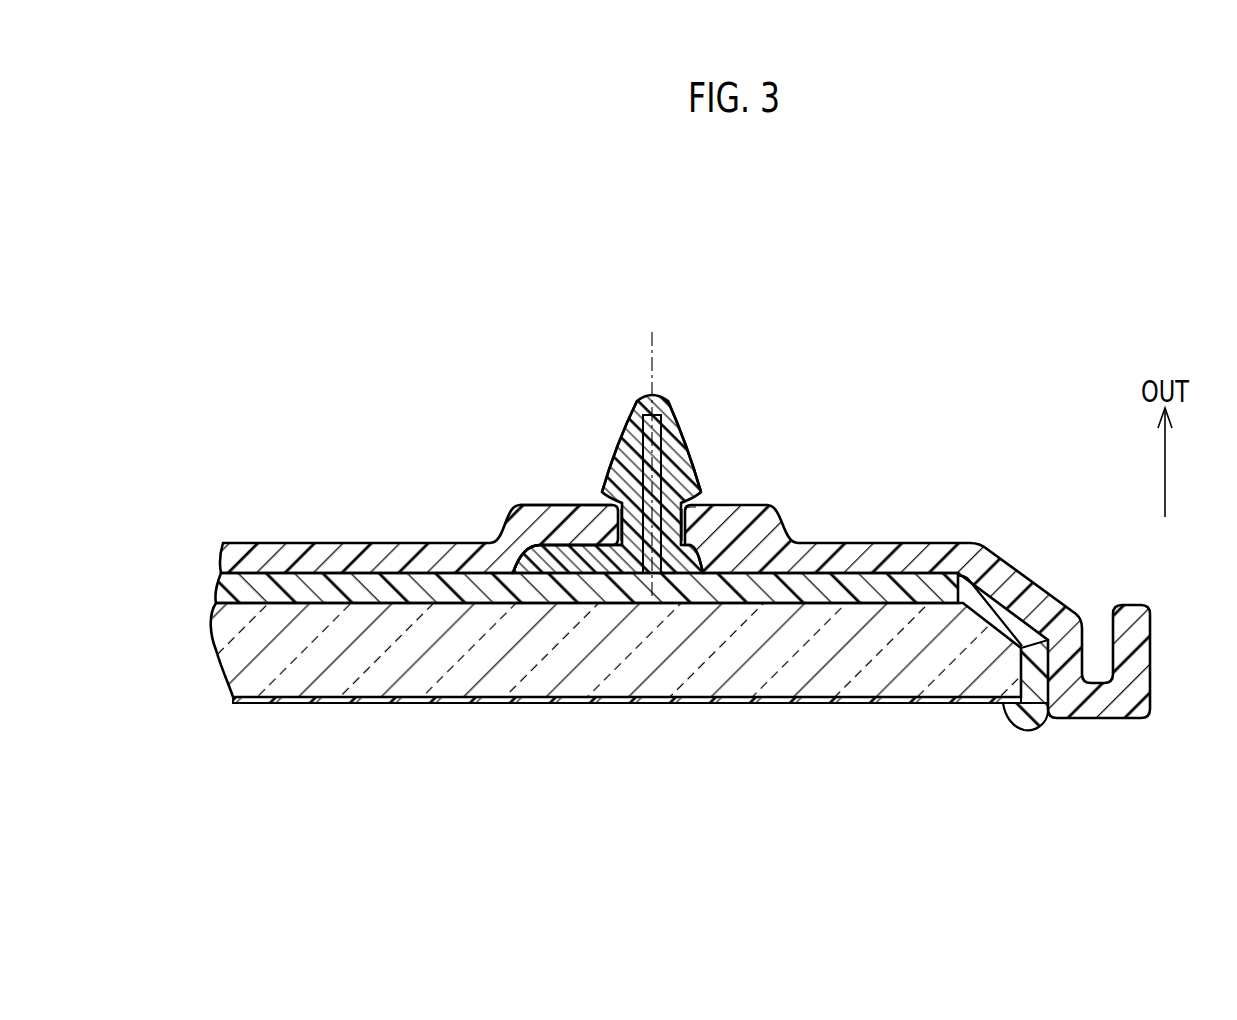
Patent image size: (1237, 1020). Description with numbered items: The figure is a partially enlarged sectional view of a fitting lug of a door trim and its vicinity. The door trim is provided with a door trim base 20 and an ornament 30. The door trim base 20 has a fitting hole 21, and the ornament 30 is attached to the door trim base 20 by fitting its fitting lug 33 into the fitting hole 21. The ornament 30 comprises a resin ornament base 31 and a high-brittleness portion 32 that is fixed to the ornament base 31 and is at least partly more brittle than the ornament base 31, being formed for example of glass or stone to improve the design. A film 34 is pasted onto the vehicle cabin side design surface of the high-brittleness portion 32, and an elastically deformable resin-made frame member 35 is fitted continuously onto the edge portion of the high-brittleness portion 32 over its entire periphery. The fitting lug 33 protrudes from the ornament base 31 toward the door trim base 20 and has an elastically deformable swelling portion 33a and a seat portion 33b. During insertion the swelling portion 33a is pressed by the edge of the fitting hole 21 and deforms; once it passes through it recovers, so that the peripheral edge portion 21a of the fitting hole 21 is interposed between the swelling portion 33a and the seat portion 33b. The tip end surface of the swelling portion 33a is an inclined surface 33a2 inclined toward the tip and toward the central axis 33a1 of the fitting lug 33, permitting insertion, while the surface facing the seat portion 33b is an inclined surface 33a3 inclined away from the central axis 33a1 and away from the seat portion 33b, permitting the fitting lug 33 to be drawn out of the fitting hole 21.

The door trim base 20 is at (912, 518).
The fitting hole 21 is at (672, 503).
The peripheral edge portion 21a is at (693, 515).
The ornament 30 is at (651, 685).
The ornament base 31 is at (410, 590).
The high-brittleness portion 32 is at (463, 680).
The fitting lug 33 is at (608, 444).
The swelling portion 33a is at (631, 463).
The central axis 33a1 is at (655, 373).
The inclined surface 33a2 is at (677, 418).
The inclined surface 33a3 is at (567, 514).
The seat portion 33b is at (613, 555).
The film 34 is at (547, 698).
The frame member 35 is at (1038, 702).